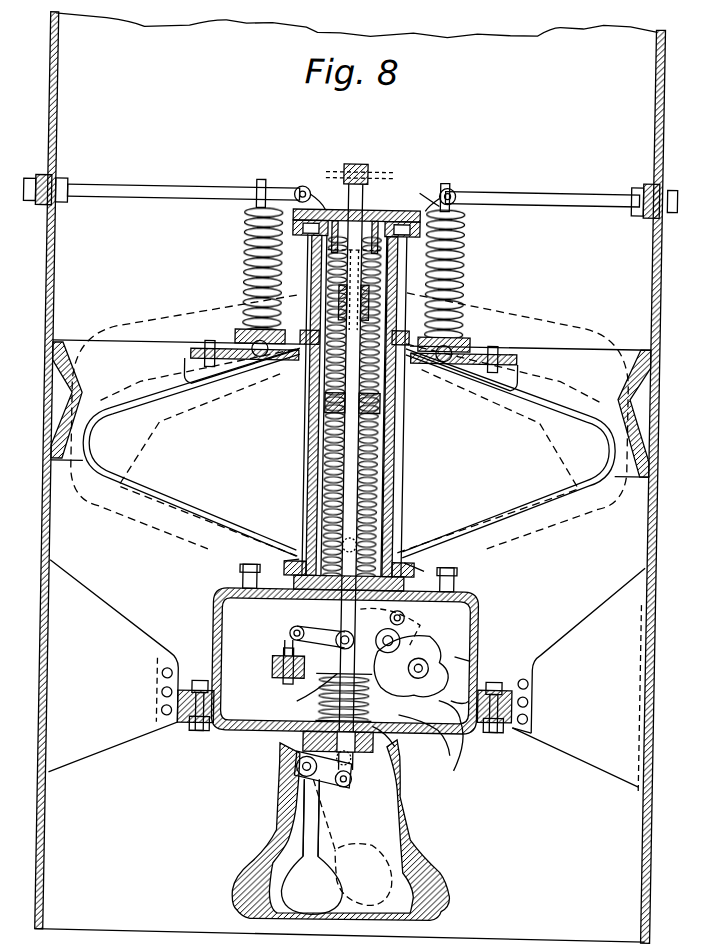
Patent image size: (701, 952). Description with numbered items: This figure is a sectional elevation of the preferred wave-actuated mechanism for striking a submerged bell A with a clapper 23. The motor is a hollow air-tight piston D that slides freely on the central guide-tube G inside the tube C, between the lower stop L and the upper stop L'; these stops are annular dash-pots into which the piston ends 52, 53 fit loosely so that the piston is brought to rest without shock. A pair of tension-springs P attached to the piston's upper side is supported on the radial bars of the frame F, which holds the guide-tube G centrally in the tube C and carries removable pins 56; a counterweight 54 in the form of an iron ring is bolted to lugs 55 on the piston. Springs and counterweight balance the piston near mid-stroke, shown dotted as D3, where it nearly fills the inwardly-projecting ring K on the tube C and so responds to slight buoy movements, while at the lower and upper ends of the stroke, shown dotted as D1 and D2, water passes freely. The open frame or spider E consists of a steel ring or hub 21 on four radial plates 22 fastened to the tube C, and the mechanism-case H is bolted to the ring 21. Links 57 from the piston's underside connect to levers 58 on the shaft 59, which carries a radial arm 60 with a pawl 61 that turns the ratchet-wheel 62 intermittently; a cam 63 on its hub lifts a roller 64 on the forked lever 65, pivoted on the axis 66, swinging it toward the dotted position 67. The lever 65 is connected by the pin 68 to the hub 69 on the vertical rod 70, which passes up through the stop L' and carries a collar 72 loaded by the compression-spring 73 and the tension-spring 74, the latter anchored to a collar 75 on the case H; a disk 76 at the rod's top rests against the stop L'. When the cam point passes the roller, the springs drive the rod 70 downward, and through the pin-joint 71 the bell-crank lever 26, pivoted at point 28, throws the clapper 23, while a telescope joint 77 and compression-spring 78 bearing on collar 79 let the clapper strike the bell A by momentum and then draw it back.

The frame F is at (148, 194).
The disk 76 is at (368, 191).
The pins 56 is at (412, 197).
The upper stop L' is at (492, 239).
The tension-springs P is at (241, 298).
The central guide-tube G is at (310, 271).
The piston end 53 is at (403, 344).
The counterweight 54 is at (500, 351).
The lugs 55 is at (511, 377).
The compression-spring 73 is at (380, 369).
The collar 72 is at (380, 401).
The circumferential ring K is at (79, 390).
The motor piston D is at (267, 532).
The piston lower-end position D1 is at (600, 485).
The piston upper-end position D2 is at (597, 325).
The piston balanced position D3 is at (612, 421).
The tube C is at (46, 484).
The vertical rod 70 is at (347, 505).
The tension-spring 74 is at (372, 529).
The piston end 52 is at (401, 565).
The lower stop L is at (360, 577).
The mechanism-case H is at (217, 615).
The collar 75 is at (251, 592).
The forked lever 65 is at (294, 631).
The links 57 is at (342, 621).
The lever lifted position 67 is at (414, 615).
The pawl 61 is at (418, 624).
The hub 69 is at (344, 637).
The roller 64 is at (384, 636).
The radial arm 60 is at (440, 638).
The ratchet-wheel 62 is at (432, 661).
The shaft 59 is at (460, 657).
The axis 66 is at (292, 642).
The pin 68 is at (288, 664).
The collar 79 is at (302, 702).
The telescope joint 77 is at (323, 701).
The compression-spring 78 is at (309, 734).
The levers 58 is at (458, 739).
The cam 63 is at (463, 756).
The ring or hub 21 is at (504, 730).
The radial plates 22 is at (579, 744).
The open frame or spider E is at (161, 702).
The pivot point 28 is at (303, 768).
The pin-joint 71 is at (359, 781).
The bell-crank lever 26 is at (311, 832).
The underwater sound-producing device A is at (245, 888).
The bell-clapper 23 is at (337, 847).